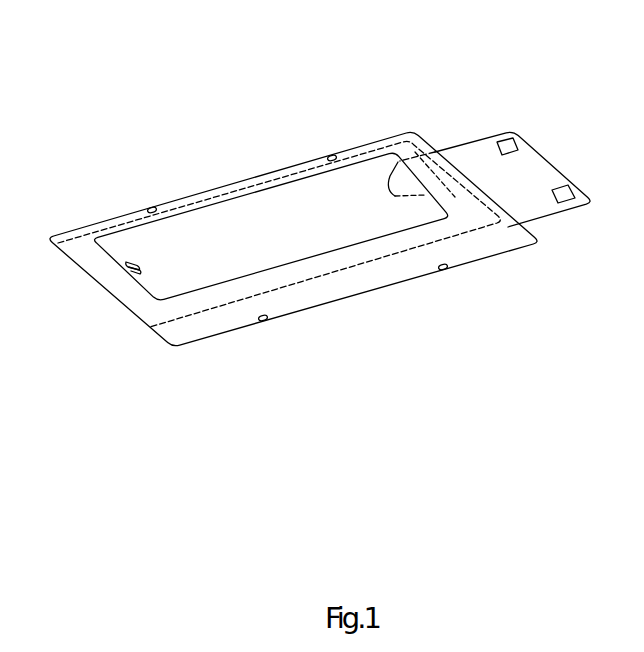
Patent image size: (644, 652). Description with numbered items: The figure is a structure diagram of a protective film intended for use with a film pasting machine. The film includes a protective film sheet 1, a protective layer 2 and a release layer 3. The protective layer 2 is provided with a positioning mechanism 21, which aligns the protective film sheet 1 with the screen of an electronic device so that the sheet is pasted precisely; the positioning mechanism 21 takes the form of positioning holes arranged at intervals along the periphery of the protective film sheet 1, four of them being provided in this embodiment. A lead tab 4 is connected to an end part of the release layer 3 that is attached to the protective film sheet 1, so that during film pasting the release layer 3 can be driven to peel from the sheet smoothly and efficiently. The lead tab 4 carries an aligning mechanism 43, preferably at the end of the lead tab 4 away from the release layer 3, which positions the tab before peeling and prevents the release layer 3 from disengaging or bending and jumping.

The protective film sheet 1 is at (177, 257).
The protective layer 2 is at (290, 171).
The positioning mechanism 21 is at (148, 207).
The release layer 3 is at (445, 222).
The lead tab 4 is at (478, 153).
The aligning mechanism 43 is at (514, 140).